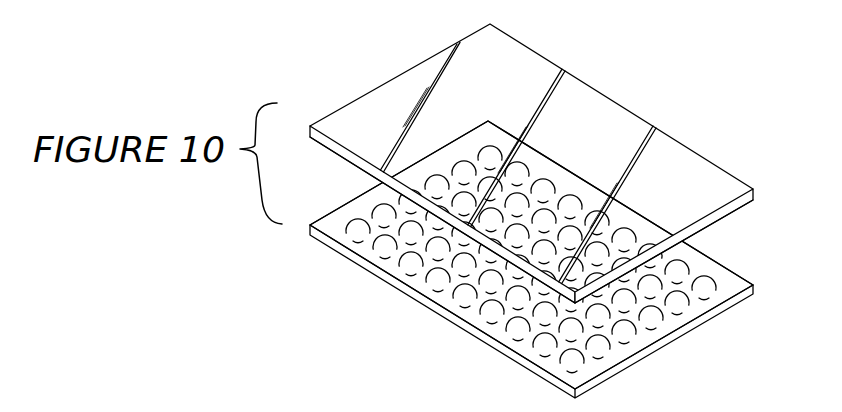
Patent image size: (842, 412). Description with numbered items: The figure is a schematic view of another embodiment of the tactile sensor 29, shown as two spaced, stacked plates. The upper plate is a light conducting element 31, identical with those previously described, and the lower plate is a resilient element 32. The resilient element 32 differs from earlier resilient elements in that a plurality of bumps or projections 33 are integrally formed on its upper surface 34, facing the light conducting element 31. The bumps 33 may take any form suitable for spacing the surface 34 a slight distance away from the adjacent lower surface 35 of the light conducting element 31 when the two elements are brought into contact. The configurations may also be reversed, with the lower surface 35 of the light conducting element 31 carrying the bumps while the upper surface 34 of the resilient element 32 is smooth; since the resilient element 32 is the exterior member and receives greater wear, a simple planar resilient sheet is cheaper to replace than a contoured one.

The sensor 29 is at (269, 231).
The light conducting element 31 is at (637, 114).
The resilient element 32 is at (431, 306).
The bumps or projections 33 is at (568, 360).
The surface 34 is at (336, 229).
The lower surface 35 is at (689, 238).